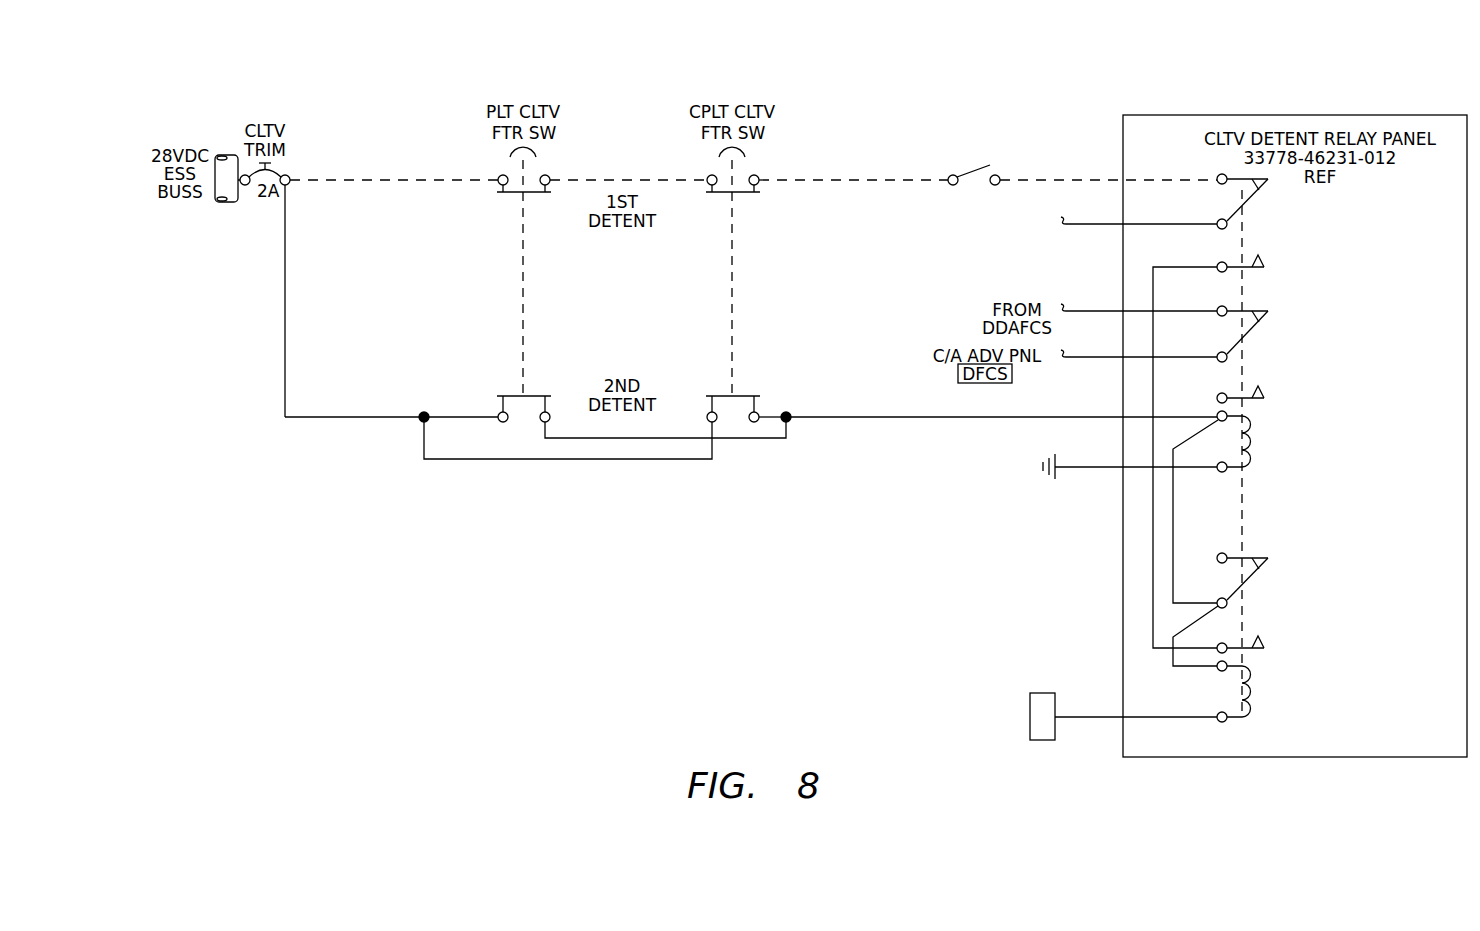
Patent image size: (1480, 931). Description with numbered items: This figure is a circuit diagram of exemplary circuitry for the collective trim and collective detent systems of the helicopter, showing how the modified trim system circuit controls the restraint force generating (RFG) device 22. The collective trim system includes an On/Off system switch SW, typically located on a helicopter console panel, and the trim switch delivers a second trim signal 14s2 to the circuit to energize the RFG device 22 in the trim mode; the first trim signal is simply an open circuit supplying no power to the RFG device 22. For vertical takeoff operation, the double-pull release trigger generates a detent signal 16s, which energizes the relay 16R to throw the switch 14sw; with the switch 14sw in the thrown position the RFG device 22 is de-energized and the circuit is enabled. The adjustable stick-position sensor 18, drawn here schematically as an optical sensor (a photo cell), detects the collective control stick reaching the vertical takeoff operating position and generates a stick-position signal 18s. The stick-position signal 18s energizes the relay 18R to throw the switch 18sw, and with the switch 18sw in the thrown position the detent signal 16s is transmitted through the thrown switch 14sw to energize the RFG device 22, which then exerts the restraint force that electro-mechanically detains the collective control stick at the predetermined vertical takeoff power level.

The second trim signal 14s2 is at (819, 173).
The On/Off system switch SW is at (998, 98).
The switch 14sw is at (1263, 222).
The restraint force generating (RFG) device 22 is at (935, 260).
The relay 16R is at (1272, 412).
The detent signal 16s is at (968, 426).
The switch 18sw is at (1252, 587).
The relay 18R is at (1266, 664).
The adjustable stick-position sensor 18 is at (1024, 700).
The stick-position signal 18s is at (1160, 724).